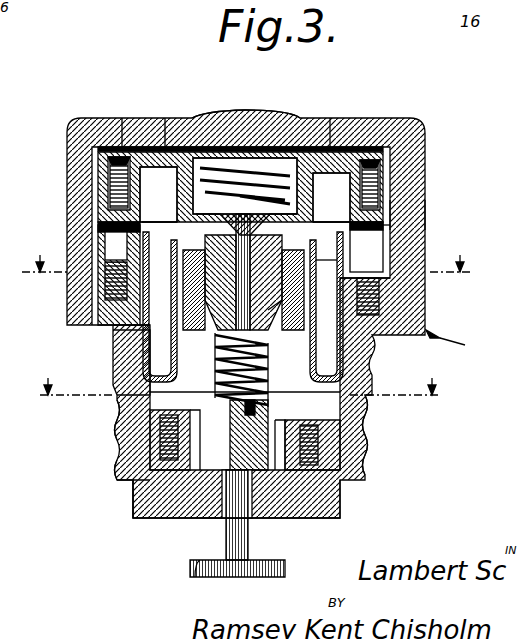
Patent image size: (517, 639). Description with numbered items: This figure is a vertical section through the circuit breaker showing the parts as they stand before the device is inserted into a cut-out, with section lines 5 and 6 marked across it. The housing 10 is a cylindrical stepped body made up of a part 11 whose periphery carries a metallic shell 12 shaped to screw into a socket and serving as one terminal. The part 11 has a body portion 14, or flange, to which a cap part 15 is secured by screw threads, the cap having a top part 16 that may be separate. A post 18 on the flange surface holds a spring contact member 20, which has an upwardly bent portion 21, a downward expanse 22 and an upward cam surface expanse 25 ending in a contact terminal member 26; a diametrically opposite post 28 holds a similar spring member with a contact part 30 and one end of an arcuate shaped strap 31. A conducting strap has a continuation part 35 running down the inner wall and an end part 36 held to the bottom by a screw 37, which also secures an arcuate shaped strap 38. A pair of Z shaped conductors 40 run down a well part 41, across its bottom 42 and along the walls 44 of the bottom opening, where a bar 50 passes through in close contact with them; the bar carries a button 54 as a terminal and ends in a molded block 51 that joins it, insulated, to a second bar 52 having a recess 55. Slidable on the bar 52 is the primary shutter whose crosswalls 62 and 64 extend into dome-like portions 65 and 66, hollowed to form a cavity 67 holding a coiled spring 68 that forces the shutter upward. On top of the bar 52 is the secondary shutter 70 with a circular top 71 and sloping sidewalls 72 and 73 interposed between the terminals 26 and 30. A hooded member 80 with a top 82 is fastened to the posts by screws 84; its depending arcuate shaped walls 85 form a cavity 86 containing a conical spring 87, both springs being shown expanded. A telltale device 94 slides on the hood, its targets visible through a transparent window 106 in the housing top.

The section line 5- 5 is at (243, 270).
The section line 6- 6 is at (238, 398).
The housing 10 is at (457, 339).
The part 11 is at (368, 462).
The metallic shell 12 is at (368, 440).
The body portion 14 is at (375, 330).
The cap part 15 is at (426, 205).
The top part 16 is at (380, 120).
The post 18 is at (110, 180).
The spring contact member 20 is at (98, 265).
The upwardly bent portion 21 is at (98, 226).
The downward expanse 22 is at (118, 355).
The upward cam surface expanse 25 is at (125, 335).
The contact terminal member 26 is at (165, 307).
The post 28 is at (392, 215).
The contact part 30 is at (366, 268).
The arcuate shaped strap 31 is at (388, 226).
The continuation part 35 is at (117, 402).
The end part 36 is at (117, 422).
The screw 37 is at (117, 458).
The arcuate shaped strap 38 is at (367, 420).
The Z shaped conductors 40 is at (135, 512).
The well part 41 is at (130, 495).
The bottom 42 is at (205, 519).
The walls of opening 44 is at (331, 209).
The bar 50 is at (226, 530).
The molded block 51 is at (254, 494).
The second bar 52 is at (245, 430).
The button 54 is at (270, 577).
The recess 55 is at (224, 370).
The crosswall 62 is at (222, 296).
The crosswall 64 is at (280, 300).
The dome-like portion 65 is at (192, 298).
The dome-like portion 66 is at (312, 307).
The cavity 67 is at (272, 385).
The coiled spring 68 is at (262, 405).
The secondary shutter 70 is at (375, 212).
The circular top 71 is at (159, 210).
The sloping sidewall 72 is at (116, 246).
The sloping sidewall 73 is at (321, 277).
The hooded member 80 is at (170, 122).
The top 82 is at (338, 130).
The screws 84 is at (98, 160).
The arcuate shaped walls 85 is at (245, 194).
The cavity 86 is at (245, 196).
The conical spring 87 is at (285, 146).
The telltale device 94 is at (118, 122).
The transparent window 106 is at (250, 115).